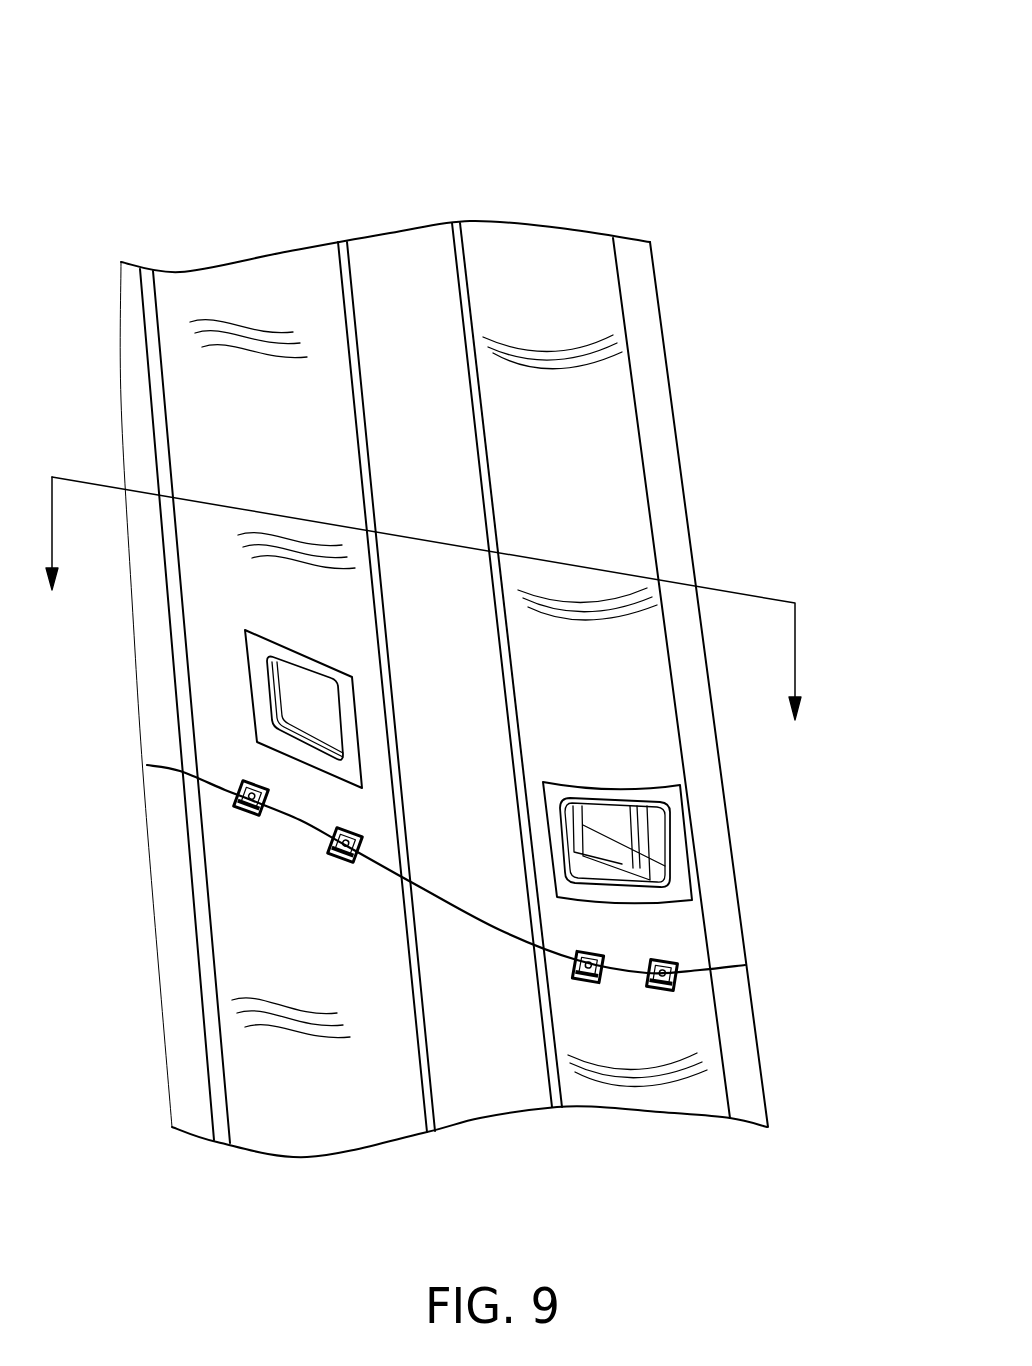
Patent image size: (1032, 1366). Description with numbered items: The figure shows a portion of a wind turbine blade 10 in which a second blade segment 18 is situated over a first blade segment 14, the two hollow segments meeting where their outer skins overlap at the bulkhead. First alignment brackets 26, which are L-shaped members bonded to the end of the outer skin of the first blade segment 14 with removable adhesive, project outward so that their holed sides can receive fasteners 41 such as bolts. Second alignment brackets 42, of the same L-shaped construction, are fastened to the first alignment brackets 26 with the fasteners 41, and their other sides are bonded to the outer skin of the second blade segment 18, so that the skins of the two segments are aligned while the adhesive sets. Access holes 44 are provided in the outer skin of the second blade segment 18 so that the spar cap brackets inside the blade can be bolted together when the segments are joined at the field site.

The wind turbine blade 10 is at (748, 75).
The first blade segment 14 is at (758, 1089).
The second blade segment 18 is at (660, 401).
The first alignment brackets 26 is at (334, 837).
The fasteners 41 is at (238, 793).
The second alignment brackets 42 is at (662, 958).
The access holes 44 is at (300, 690).